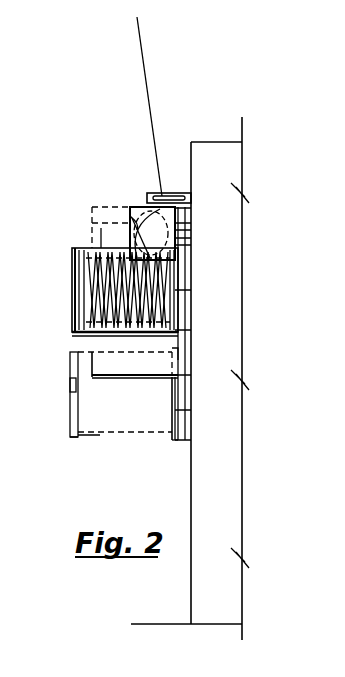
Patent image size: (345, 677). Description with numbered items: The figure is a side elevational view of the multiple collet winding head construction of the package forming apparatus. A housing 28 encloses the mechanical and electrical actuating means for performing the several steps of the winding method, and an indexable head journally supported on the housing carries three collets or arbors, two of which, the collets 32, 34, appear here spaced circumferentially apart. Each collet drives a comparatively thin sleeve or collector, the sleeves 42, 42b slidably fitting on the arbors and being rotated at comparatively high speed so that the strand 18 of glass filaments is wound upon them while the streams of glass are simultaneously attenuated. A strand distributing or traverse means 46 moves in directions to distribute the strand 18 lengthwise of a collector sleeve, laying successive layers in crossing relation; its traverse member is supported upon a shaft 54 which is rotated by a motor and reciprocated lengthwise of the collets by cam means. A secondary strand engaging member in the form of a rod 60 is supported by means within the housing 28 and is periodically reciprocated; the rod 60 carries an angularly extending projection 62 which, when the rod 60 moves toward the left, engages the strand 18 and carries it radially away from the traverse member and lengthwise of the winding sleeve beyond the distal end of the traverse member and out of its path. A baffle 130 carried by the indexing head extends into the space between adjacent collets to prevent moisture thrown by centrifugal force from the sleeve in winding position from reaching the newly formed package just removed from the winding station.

The strand 18 is at (143, 42).
The housing 28 is at (186, 152).
The collet 32 is at (70, 290).
The collet 34 is at (70, 393).
The sleeve 42 is at (78, 334).
The sleeve 42b is at (100, 437).
The traverse means 46 is at (133, 214).
The shaft 54 is at (182, 232).
The rod 60 is at (149, 194).
The angularly extending projection 62 is at (158, 193).
The baffle 130 is at (97, 378).